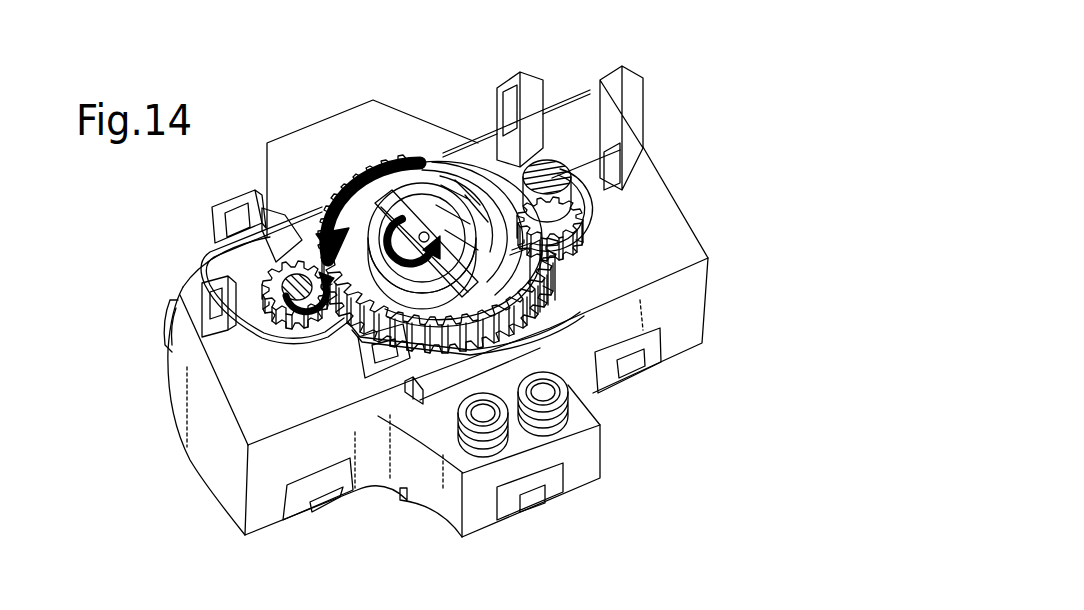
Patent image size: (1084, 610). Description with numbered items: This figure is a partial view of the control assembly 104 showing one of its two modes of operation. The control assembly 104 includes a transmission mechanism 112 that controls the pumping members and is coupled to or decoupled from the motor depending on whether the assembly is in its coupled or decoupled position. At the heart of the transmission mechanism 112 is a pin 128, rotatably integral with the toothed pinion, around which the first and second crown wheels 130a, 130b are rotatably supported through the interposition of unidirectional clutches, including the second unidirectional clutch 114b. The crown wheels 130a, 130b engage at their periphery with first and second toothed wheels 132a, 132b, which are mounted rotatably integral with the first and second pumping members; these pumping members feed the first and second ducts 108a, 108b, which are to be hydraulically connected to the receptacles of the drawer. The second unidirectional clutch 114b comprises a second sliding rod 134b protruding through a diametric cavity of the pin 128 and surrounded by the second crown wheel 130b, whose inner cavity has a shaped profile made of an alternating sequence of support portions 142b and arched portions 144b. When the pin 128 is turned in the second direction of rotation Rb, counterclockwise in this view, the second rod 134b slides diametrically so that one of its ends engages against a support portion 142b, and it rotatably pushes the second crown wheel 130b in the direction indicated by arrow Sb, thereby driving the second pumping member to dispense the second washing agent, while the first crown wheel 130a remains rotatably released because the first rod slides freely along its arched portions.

The control assembly 104 is at (678, 86).
The transmission mechanism 112 is at (272, 343).
The direction of rotation Sb is at (327, 188).
The second sliding rod 134b is at (400, 156).
The second crown wheel 130b is at (507, 263).
The arched portion 144b is at (470, 213).
The second unidirectional clutch 114b is at (420, 190).
The pin 128 is at (455, 215).
The second direction of rotation Rb is at (412, 262).
The support portion 142b is at (522, 212).
The first toothed wheel 132a is at (574, 223).
The second toothed wheel 132b is at (283, 282).
The first crown wheel 130a is at (520, 320).
The first duct 108a is at (547, 400).
The second duct 108b is at (490, 432).